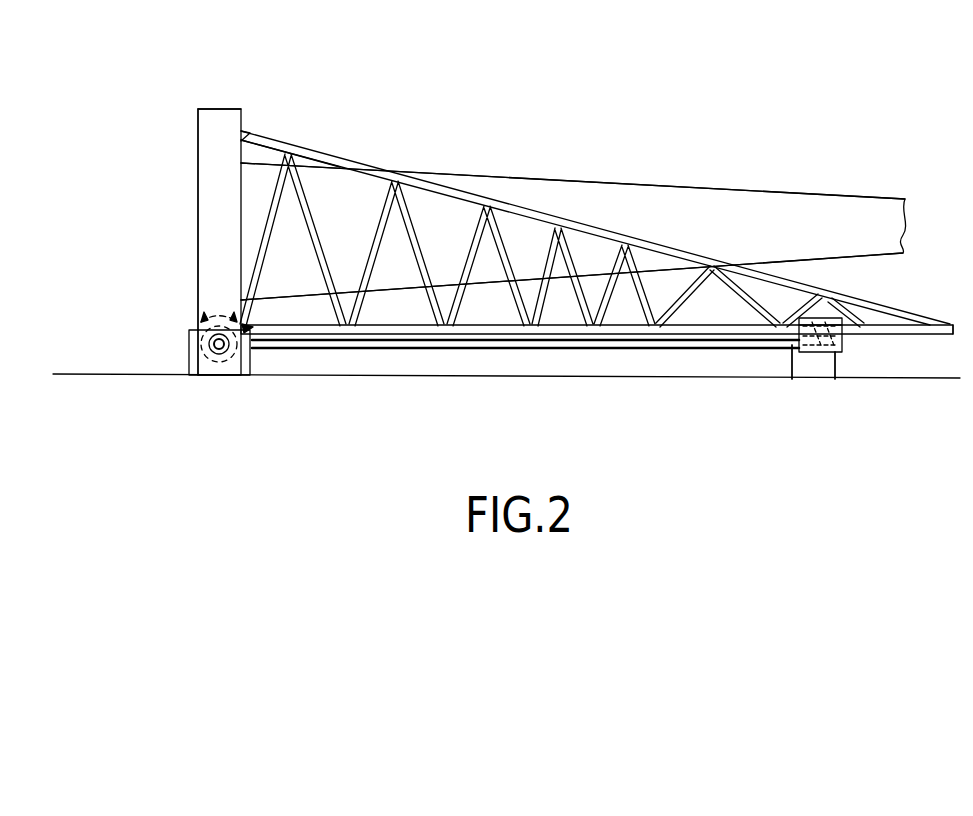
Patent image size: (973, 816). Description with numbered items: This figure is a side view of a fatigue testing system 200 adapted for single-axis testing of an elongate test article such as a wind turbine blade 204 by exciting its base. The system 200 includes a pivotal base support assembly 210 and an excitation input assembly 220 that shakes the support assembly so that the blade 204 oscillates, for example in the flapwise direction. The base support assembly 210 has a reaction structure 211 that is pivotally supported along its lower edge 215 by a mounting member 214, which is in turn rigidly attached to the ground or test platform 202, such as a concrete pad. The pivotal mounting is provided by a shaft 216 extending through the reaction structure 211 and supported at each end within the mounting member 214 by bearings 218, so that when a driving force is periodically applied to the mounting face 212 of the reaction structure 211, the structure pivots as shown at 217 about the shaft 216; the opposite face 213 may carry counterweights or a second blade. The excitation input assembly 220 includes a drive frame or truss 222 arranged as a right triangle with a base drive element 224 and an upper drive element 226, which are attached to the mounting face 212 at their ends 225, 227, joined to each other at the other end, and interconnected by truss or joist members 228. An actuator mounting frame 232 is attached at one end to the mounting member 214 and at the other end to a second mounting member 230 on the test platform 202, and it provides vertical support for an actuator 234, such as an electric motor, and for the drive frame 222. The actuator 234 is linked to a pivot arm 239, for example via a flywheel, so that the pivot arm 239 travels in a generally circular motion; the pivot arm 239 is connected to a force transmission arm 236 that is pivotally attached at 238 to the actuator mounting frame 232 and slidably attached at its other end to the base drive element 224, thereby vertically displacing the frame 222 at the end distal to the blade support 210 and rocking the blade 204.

The fatigue testing system 200 is at (528, 102).
The test platform 202 is at (93, 375).
The wind turbine blade 204 is at (874, 198).
The pivotal base support assembly 210 is at (247, 105).
The reaction structure 211 is at (222, 119).
The mounting face 212 is at (244, 124).
The face of the structure 213 is at (198, 122).
The mounting member 214 is at (190, 332).
The lower edge 215 is at (199, 348).
The shaft 216 is at (208, 363).
The pivoting of the reaction structure 217 is at (207, 324).
The bearings 218 is at (228, 362).
The excitation input assembly 220 is at (781, 190).
The drive frame 222 is at (546, 212).
The base drive element 224 is at (938, 326).
The end of base drive element 225 is at (252, 331).
The upper drive element 226 is at (796, 290).
The end of upper drive element 227 is at (283, 149).
The truss members 228 is at (643, 287).
The second mounting member 230 is at (833, 368).
The actuator mounting frame 232 is at (636, 352).
The actuator 234 is at (793, 356).
The force transmission arm 236 is at (838, 339).
The pivotal attachment 238 is at (826, 351).
The pivot arm 239 is at (822, 330).